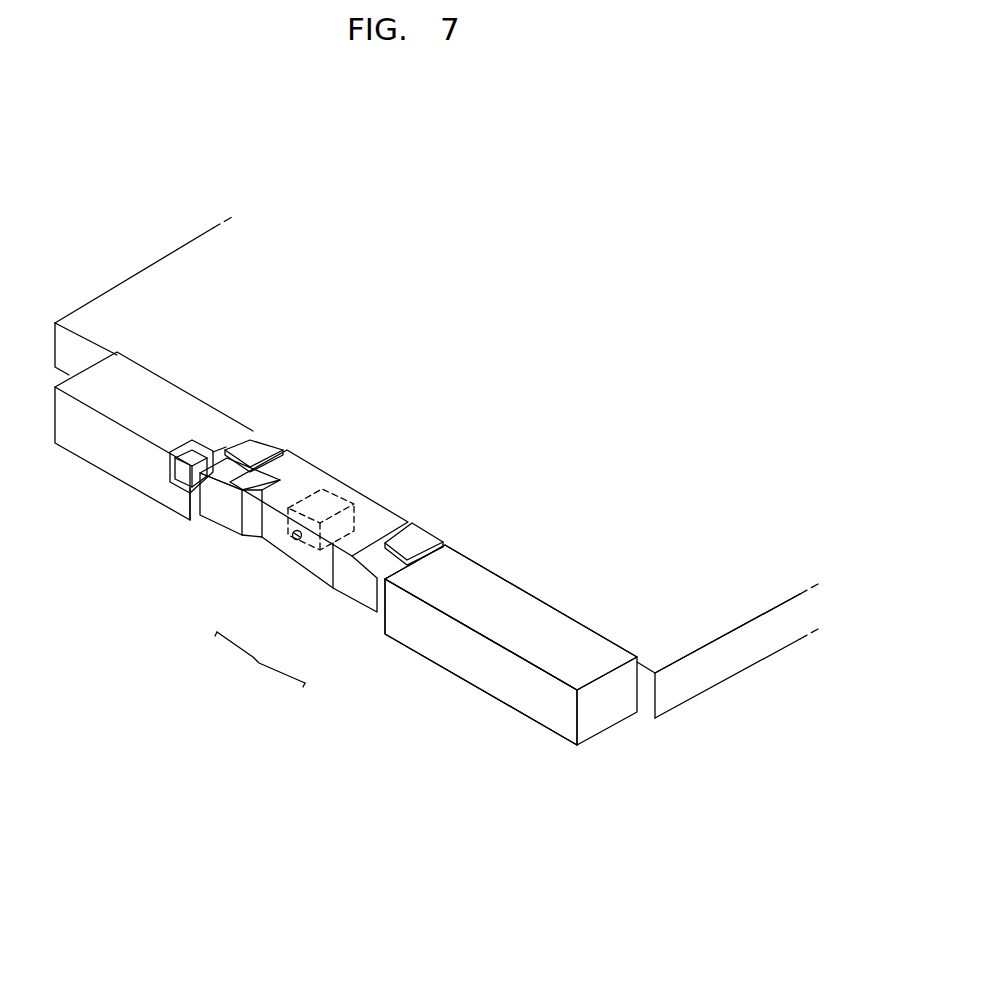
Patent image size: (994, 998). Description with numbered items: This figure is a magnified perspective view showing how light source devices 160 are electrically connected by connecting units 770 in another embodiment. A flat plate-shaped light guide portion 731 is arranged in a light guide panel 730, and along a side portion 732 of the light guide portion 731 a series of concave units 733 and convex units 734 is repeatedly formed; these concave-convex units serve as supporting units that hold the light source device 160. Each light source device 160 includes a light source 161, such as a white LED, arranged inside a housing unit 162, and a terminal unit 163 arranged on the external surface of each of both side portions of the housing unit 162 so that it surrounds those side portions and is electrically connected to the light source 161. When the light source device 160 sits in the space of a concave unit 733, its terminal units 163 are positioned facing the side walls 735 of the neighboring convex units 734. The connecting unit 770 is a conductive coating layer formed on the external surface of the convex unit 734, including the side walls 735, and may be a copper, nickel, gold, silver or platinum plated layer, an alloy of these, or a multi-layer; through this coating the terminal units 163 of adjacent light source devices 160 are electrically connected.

The light source device 160 is at (260, 661).
The light source 161 is at (305, 542).
The housing unit 162 is at (320, 558).
The terminal unit 163 is at (400, 547).
The light guide panel 730 is at (722, 693).
The light guide portion 731 is at (660, 567).
The side portion 732 is at (498, 672).
The concave unit 733 is at (352, 487).
The convex unit 734 is at (155, 367).
The side wall 735 is at (220, 453).
The connecting unit 770 is at (515, 605).